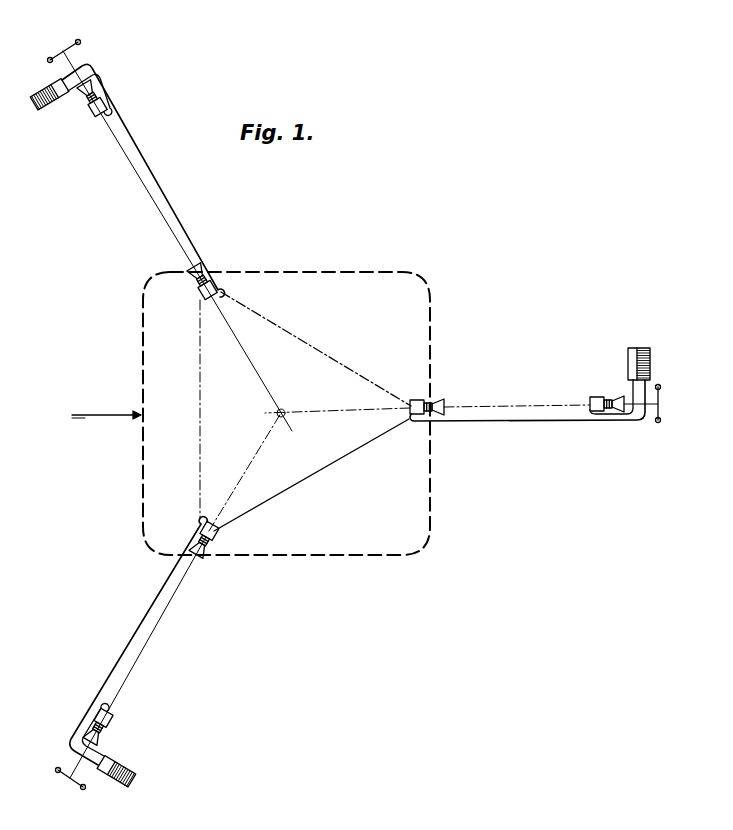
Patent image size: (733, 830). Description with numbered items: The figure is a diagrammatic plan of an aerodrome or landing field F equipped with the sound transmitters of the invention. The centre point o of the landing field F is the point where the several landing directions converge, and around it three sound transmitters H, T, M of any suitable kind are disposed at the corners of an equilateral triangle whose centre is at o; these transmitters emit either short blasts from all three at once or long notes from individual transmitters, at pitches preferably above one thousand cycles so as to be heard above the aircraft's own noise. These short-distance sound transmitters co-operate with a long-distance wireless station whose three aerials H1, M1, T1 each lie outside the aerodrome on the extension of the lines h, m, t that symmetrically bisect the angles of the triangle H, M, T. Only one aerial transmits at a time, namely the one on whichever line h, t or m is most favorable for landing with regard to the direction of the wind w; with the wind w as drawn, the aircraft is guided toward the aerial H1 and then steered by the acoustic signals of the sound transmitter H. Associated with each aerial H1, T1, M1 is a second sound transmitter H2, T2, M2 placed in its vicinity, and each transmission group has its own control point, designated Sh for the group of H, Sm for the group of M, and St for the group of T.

The aerial M1 is at (124, 151).
The control point Sm is at (40, 104).
The second sound transmitter M2 is at (90, 110).
The sound transmitter M is at (217, 276).
The landing field F is at (286, 413).
The bisecting line m is at (248, 357).
The bisecting line h is at (337, 403).
The centre point o is at (291, 424).
The bisecting line t is at (245, 472).
The sound transmitter T is at (203, 553).
The direction of the wind w is at (106, 426).
The sound transmitter H is at (500, 400).
The second sound transmitter H2 is at (605, 390).
The aerial H1 is at (663, 404).
The control point Sh is at (650, 347).
The second sound transmitter T2 is at (111, 720).
The aerial T1 is at (129, 677).
The control point St is at (131, 787).